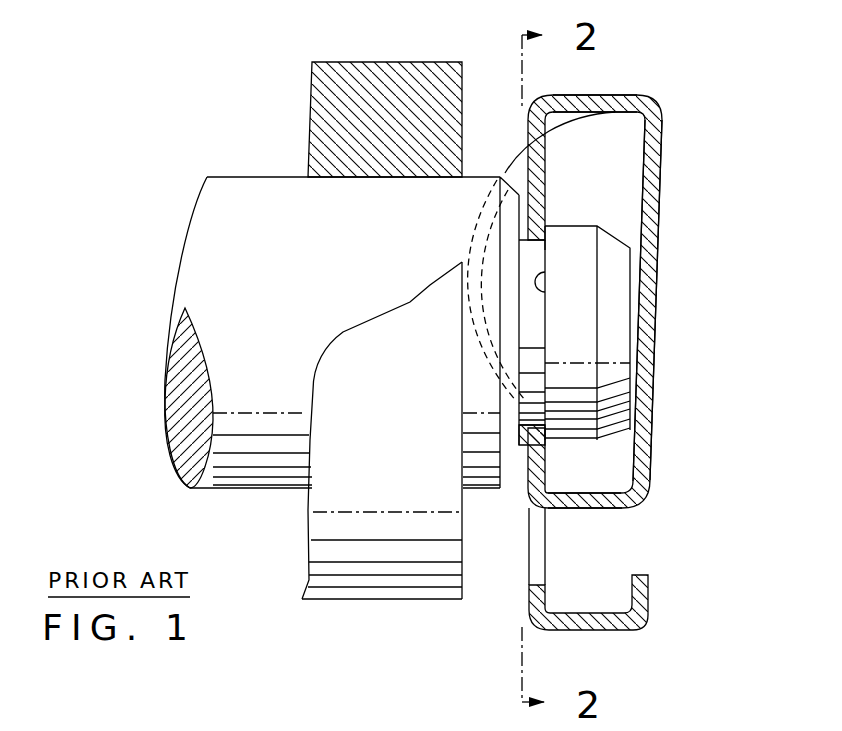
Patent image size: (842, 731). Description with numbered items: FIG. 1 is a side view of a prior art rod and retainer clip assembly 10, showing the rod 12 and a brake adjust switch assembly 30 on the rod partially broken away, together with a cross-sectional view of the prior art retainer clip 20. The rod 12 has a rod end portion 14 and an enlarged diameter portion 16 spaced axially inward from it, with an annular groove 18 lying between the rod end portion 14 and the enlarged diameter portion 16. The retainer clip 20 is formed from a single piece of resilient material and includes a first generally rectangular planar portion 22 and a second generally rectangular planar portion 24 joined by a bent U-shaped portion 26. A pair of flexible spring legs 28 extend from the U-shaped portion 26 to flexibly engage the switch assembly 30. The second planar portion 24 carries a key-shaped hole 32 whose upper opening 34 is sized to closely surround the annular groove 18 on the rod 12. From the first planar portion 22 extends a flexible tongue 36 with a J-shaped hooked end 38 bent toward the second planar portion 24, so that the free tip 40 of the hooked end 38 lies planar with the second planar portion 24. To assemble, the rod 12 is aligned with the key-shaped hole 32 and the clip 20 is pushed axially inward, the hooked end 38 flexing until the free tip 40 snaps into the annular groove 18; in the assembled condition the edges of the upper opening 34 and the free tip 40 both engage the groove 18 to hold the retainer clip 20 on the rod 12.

The rod and retainer clip assembly 10 is at (222, 88).
The rod 12 is at (185, 190).
The rod end portion 14 is at (615, 310).
The enlarged diameter portion 16 is at (200, 245).
The annular groove 18 is at (552, 290).
The retainer clip 20 is at (672, 132).
The first generally rectangular planar portion 22 is at (663, 197).
The second generally rectangular planar portion 24 is at (545, 188).
The bent U-shaped portion 26 is at (630, 97).
The flexible spring legs 28 is at (507, 170).
The brake adjust switch assembly 30 is at (330, 68).
The key-shaped hole 32 is at (544, 572).
The upper opening 34 is at (545, 251).
The flexible tongue 36 is at (640, 470).
The J-shaped hooked end 38 is at (612, 516).
The free tip 40 is at (540, 472).